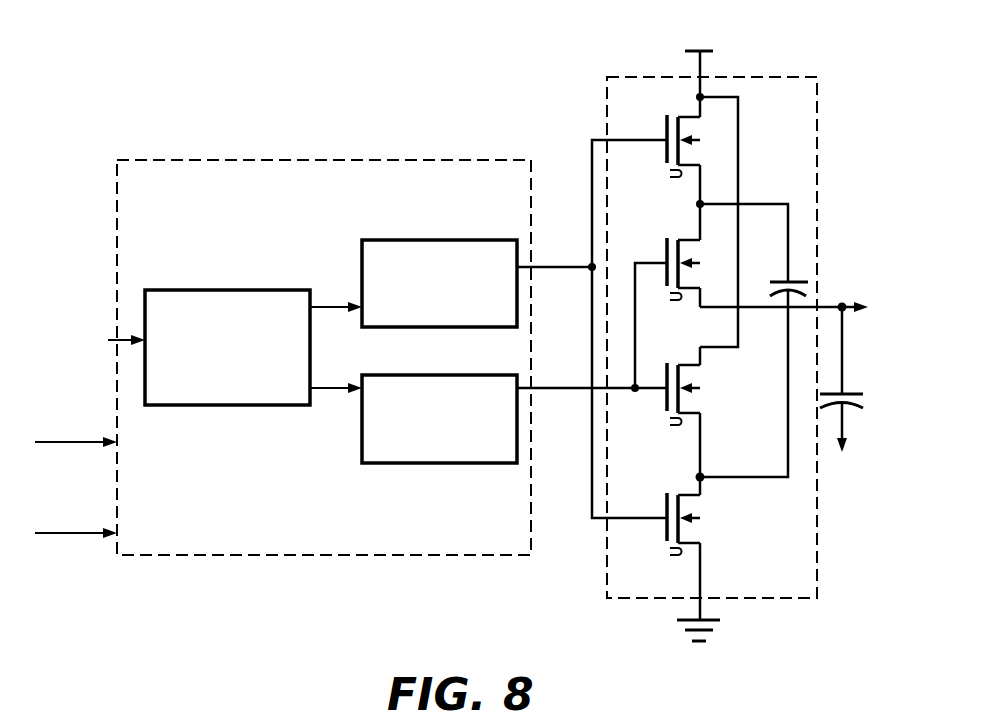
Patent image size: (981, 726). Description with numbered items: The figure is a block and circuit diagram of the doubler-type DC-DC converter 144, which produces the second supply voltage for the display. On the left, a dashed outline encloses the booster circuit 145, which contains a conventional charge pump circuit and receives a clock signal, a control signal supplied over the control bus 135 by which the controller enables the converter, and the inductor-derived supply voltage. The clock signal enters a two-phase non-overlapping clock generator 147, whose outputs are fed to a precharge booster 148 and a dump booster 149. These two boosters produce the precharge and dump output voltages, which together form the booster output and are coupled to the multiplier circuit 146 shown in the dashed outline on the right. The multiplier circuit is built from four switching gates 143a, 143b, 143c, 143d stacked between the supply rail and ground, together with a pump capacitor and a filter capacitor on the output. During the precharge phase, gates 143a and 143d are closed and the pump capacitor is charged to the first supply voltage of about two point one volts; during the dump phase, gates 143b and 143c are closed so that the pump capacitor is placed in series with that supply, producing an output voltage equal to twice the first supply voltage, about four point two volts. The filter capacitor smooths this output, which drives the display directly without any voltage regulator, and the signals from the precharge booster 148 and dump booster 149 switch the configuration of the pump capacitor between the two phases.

The VDD2 DC-DC converter 144 is at (151, 102).
The VDD2 booster circuit 145 is at (130, 208).
The VDD2 Multiplier circuit 146 is at (595, 104).
The two-phase non-overlapping clock generator 147 is at (192, 405).
The precharge booster 148 is at (380, 240).
The dump booster 149 is at (380, 463).
The control bus 135 is at (78, 444).
The gate 143a is at (665, 540).
The gate 143b is at (665, 410).
The gate 143c is at (665, 252).
The gate 143d is at (664, 155).